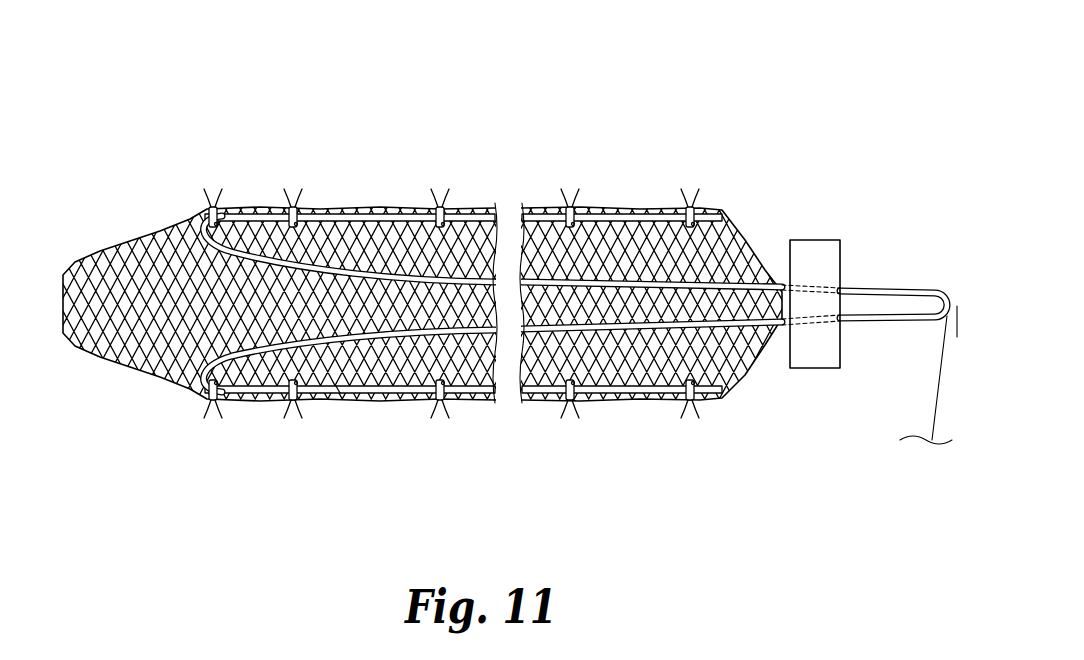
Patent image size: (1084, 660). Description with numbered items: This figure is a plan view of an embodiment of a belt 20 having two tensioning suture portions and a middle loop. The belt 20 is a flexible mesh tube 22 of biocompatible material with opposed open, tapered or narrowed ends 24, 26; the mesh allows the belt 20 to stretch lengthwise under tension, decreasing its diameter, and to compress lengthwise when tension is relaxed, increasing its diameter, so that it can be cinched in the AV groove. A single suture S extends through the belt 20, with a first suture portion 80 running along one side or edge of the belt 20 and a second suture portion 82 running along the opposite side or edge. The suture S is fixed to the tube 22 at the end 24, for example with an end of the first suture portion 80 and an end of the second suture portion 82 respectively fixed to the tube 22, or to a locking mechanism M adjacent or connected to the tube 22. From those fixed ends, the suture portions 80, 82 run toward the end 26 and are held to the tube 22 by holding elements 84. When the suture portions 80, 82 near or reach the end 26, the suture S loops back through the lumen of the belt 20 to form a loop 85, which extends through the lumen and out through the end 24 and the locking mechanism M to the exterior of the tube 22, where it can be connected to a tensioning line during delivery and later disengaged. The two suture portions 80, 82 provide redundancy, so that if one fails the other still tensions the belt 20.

The belt 20 is at (478, 272).
The mesh tube 22 is at (260, 212).
The end 24 is at (758, 221).
The end 26 is at (135, 205).
The first suture portion 80 is at (400, 218).
The second suture portion 82 is at (377, 390).
The holding element 84 is at (690, 172).
The loop 85 is at (892, 292).
The locking mechanism M is at (828, 252).
The suture S is at (340, 388).